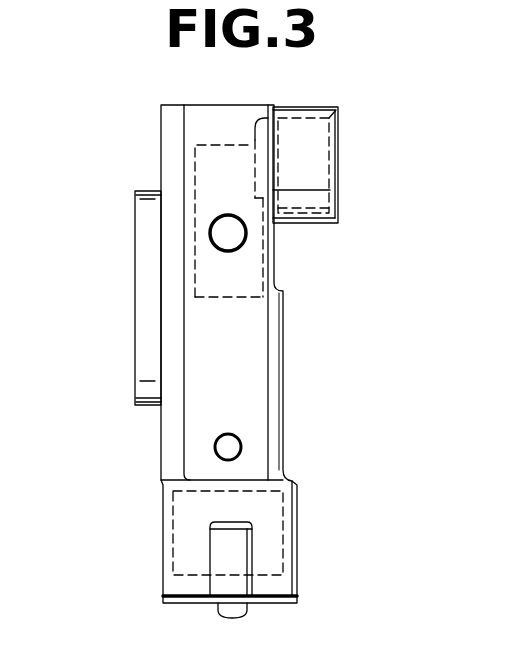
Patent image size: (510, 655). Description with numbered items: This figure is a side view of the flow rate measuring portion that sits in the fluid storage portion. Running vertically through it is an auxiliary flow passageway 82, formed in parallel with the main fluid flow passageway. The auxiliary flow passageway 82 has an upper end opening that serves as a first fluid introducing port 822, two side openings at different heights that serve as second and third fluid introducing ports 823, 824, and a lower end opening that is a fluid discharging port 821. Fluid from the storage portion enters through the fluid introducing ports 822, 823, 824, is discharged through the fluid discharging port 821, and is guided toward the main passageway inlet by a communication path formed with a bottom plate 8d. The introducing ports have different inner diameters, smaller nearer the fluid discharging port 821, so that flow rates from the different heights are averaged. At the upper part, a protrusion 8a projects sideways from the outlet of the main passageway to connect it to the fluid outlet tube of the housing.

The auxiliary flow passageway 82 is at (200, 340).
The first fluid introducing port 822 is at (208, 105).
The second fluid introducing port 823 is at (209, 236).
The third fluid introducing port 824 is at (214, 438).
The fluid discharging port 821 is at (190, 585).
The protrusion 8a is at (338, 107).
The bottom plate 8d is at (274, 603).